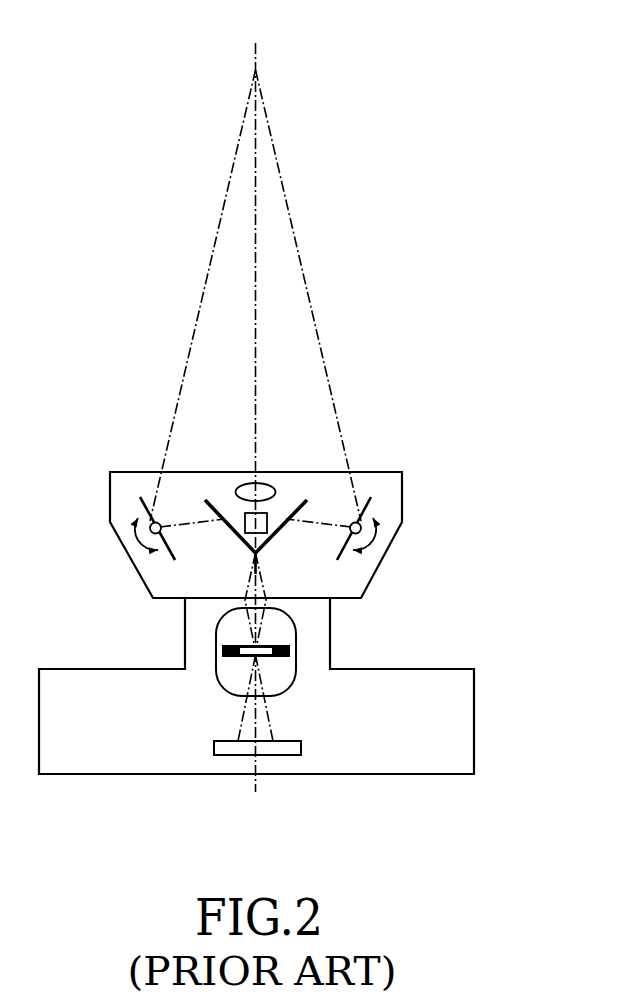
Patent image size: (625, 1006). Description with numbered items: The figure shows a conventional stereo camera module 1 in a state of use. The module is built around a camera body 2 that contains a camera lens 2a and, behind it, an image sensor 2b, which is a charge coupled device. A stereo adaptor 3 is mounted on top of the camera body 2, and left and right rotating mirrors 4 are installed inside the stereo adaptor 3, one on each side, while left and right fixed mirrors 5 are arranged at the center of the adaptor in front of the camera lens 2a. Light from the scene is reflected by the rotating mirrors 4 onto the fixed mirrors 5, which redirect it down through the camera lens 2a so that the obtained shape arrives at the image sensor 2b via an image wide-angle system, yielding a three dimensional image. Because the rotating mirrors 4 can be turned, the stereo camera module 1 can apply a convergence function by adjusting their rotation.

The stereo camera module 1 is at (404, 126).
The camera body 2 is at (474, 722).
The camera lens 2a is at (292, 650).
The image sensor 2b is at (285, 750).
The stereo adaptor 3 is at (413, 486).
The rotating mirrors 4 is at (138, 498).
The fixed mirrors 5 is at (216, 503).